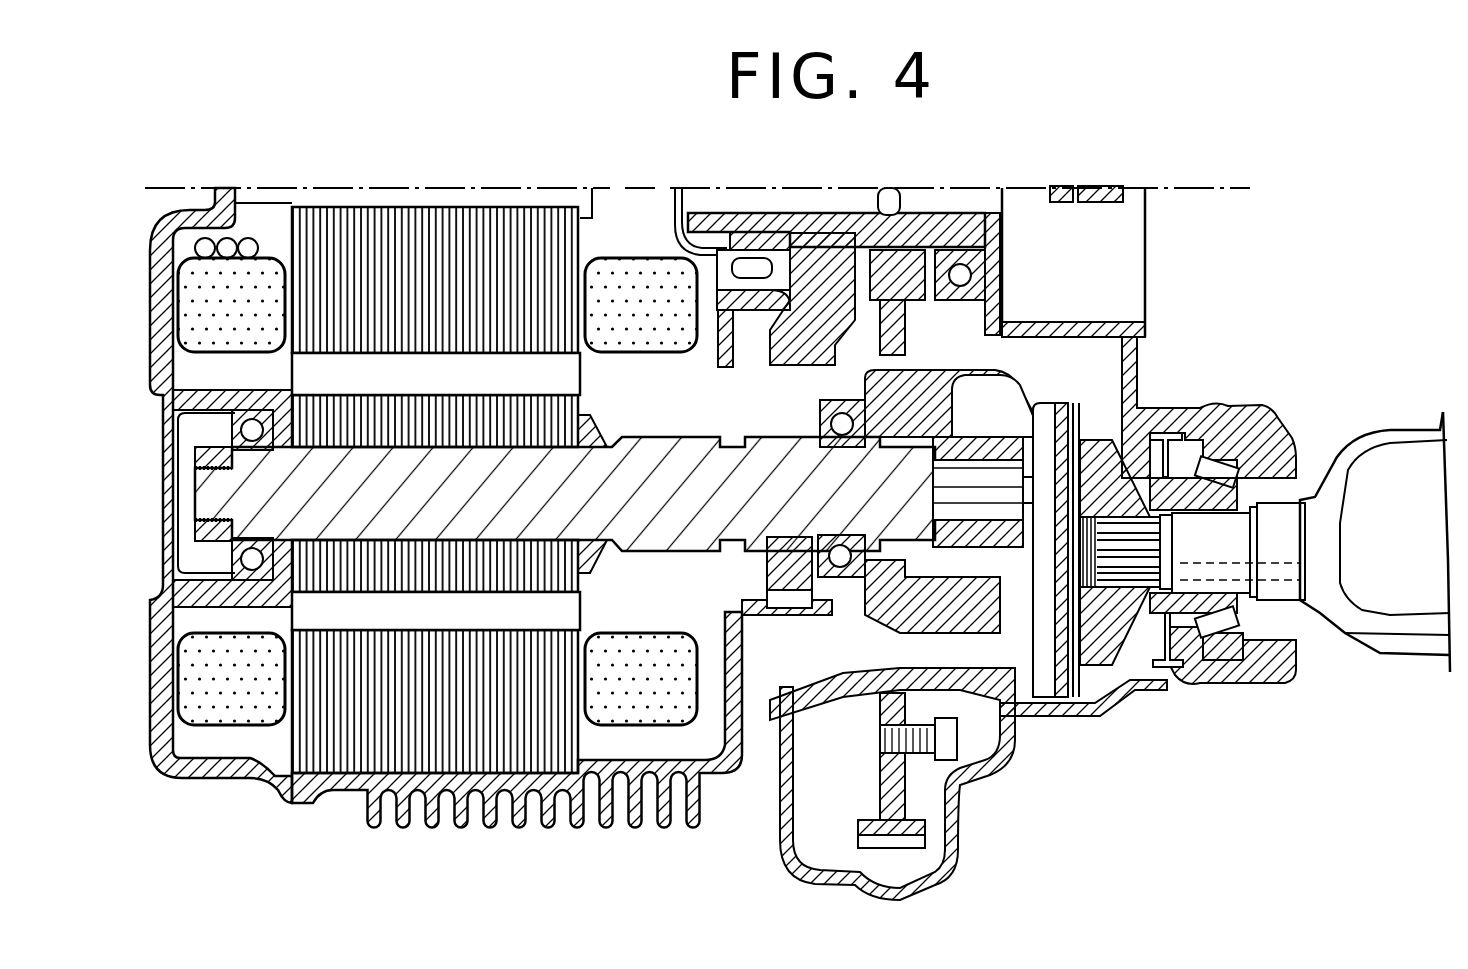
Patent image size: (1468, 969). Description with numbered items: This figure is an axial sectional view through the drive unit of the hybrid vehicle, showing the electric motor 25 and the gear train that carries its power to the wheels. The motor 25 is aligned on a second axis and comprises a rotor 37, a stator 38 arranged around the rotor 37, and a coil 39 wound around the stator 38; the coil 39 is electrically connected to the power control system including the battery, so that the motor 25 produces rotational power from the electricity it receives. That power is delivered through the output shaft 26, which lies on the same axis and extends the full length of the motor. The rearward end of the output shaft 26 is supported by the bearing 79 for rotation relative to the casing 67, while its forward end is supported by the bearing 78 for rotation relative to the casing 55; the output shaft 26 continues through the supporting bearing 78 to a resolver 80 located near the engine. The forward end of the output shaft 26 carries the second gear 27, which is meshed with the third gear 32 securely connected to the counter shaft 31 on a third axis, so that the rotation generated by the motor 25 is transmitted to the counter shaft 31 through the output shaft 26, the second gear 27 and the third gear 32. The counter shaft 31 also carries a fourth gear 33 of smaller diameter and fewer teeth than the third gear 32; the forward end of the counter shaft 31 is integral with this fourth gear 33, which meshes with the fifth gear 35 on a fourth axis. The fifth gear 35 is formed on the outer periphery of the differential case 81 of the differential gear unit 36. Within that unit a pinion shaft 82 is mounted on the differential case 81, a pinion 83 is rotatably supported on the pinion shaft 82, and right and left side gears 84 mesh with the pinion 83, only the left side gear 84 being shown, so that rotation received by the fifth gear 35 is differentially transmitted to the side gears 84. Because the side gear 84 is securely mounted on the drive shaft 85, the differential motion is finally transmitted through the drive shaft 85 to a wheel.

The motor 25 is at (481, 203).
The output shaft 26 is at (527, 509).
The second gear 27 is at (778, 598).
The counter shaft 31 is at (922, 230).
The third gear 32 is at (760, 358).
The fourth gear 33 is at (925, 300).
The fifth gear 35 is at (910, 842).
The differential gear unit 36 is at (1030, 705).
The rotor 37 is at (560, 410).
The stator 38 is at (420, 215).
The coil 39 is at (266, 262).
The casing 55 is at (990, 615).
The casing 67 is at (176, 772).
The bearing 78 is at (840, 560).
The bearing 79 is at (235, 560).
The resolver 80 is at (980, 437).
The differential case 81 is at (1100, 690).
The pinion shaft 82 is at (1055, 680).
The pinion 83 is at (1130, 705).
The side gear 84 is at (1160, 425).
The drive shaft 85 is at (1240, 540).